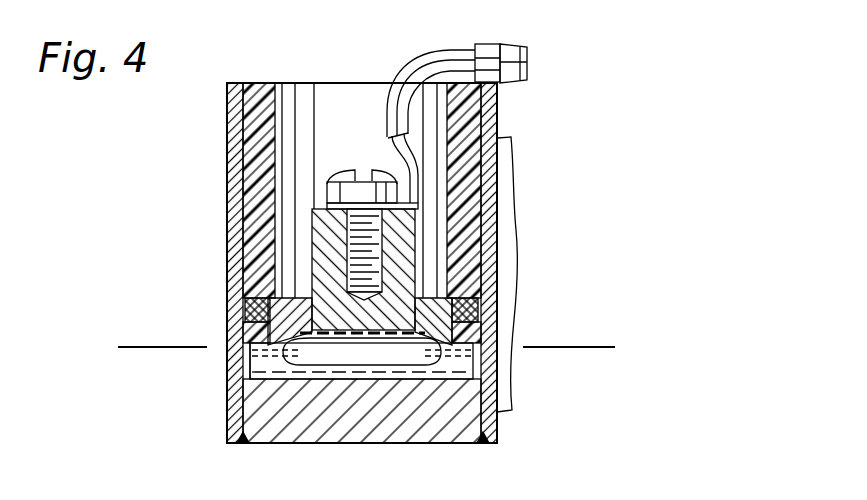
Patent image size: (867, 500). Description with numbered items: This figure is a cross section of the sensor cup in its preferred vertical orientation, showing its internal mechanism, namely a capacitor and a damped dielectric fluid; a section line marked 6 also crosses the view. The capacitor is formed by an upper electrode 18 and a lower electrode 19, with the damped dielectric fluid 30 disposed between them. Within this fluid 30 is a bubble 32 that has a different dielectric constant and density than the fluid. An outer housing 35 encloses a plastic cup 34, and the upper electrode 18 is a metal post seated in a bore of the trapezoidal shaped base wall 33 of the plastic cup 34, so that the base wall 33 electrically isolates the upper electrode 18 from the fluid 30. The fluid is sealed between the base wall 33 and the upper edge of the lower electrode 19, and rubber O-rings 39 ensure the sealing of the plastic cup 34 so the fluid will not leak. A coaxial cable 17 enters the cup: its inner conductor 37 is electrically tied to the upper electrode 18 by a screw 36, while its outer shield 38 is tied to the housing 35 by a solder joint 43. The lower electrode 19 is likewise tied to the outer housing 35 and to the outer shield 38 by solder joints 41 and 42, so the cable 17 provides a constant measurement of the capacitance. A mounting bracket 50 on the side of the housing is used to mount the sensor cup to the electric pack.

The section line 6- 6 is at (132, 338).
The coaxial cable 17 is at (445, 44).
The upper electrode 18 is at (312, 252).
The lower electrode 19 is at (337, 444).
The damped dielectric fluid 30 is at (467, 372).
The bubble 32 is at (417, 355).
The base wall 33 is at (257, 362).
The plastic cup 34 is at (262, 215).
The outer housing 35 is at (236, 125).
The screw 36 is at (330, 175).
The inner conductor 37 is at (403, 158).
The outer shield 38 is at (492, 43).
The rubber O-rings 39 is at (248, 312).
The solder joint 41 is at (244, 442).
The solder joint 42 is at (483, 443).
The solder joint 43 is at (527, 70).
The mounting bracket 50 is at (503, 175).